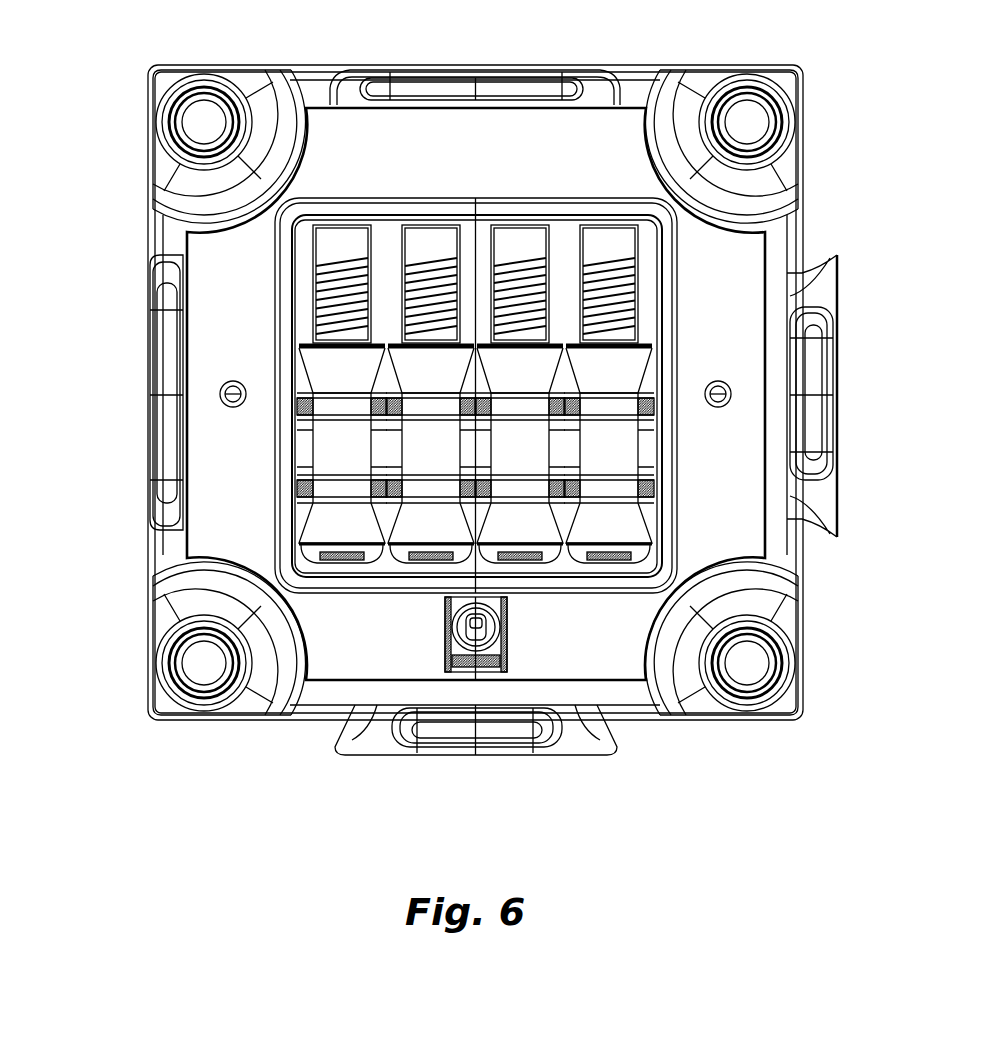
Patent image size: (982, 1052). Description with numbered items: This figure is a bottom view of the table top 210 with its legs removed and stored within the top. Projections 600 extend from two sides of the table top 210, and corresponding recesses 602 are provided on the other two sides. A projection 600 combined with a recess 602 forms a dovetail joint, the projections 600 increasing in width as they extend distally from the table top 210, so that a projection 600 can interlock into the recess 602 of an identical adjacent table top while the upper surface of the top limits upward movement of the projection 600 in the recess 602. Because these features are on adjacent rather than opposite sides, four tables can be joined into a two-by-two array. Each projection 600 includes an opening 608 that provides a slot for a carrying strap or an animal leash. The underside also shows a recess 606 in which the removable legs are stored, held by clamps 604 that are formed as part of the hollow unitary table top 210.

The table top 210 is at (193, 738).
The projection 600 is at (838, 243).
The recess 602 is at (437, 92).
The clamp 604 is at (644, 507).
The recess 606 is at (634, 575).
The opening 608 is at (449, 734).